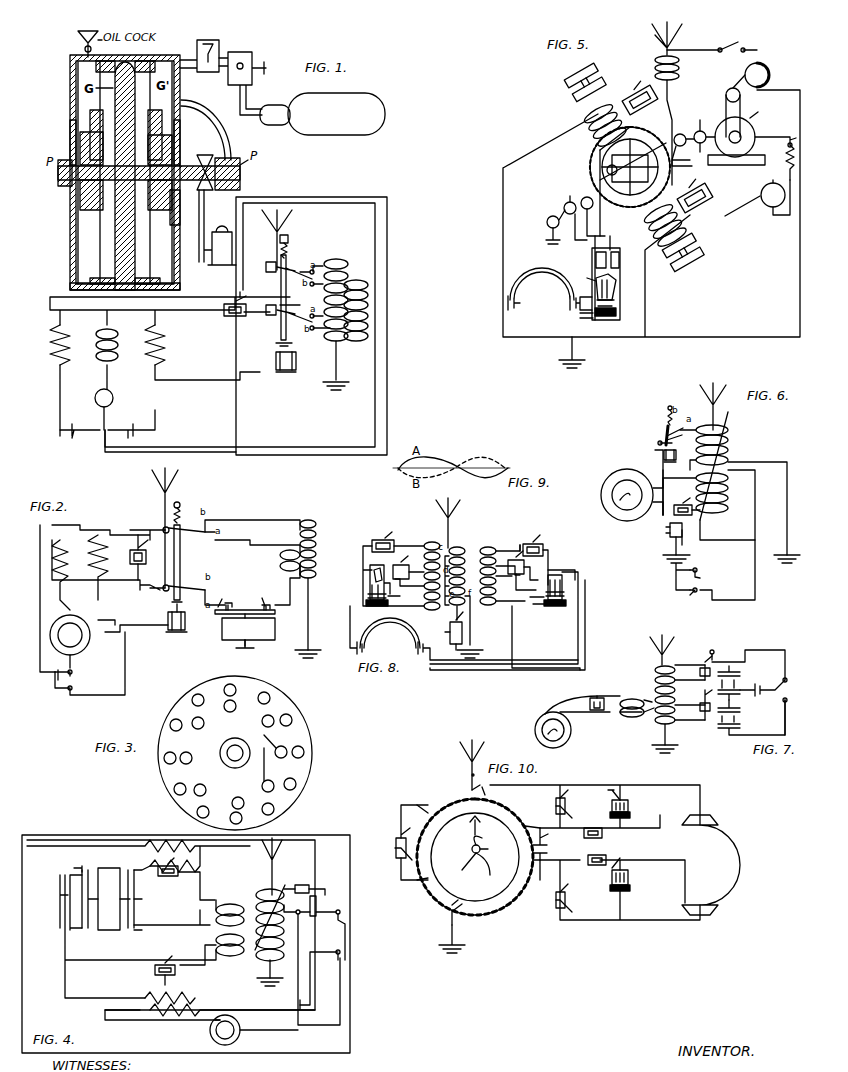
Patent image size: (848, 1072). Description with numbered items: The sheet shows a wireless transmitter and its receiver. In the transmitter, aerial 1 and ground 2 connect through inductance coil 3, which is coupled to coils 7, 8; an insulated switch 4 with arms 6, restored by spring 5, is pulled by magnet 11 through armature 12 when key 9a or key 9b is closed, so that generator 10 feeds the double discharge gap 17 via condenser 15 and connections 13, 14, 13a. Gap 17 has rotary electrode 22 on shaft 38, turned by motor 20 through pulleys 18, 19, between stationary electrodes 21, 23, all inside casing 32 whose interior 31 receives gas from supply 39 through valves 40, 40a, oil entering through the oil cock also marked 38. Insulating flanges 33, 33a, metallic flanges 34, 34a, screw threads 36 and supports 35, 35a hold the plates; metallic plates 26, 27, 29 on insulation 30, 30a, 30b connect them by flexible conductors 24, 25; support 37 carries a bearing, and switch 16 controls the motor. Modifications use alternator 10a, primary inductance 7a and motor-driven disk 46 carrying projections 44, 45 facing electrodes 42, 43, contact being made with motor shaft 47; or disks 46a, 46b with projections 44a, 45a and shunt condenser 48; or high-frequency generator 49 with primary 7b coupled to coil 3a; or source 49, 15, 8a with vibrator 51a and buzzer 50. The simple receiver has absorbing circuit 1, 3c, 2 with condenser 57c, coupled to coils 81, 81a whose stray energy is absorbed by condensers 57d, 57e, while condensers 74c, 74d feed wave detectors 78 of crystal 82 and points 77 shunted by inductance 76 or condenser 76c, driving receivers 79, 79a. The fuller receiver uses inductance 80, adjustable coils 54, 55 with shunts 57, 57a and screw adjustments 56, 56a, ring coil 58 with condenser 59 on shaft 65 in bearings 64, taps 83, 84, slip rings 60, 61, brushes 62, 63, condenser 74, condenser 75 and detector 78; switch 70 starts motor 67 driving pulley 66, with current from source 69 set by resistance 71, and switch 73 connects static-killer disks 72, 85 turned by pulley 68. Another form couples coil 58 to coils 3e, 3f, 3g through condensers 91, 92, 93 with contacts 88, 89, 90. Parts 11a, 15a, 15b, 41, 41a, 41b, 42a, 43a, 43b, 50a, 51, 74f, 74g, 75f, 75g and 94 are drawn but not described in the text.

In FIG. 1, the aerial or antenna system 1 is at (286, 222).
In FIG. 5, the aerial or antenna system 1 is at (672, 38).
In FIG. 6, the aerial or antenna system 1 is at (719, 406).
In FIG. 8, the aerial or antenna system 1 is at (452, 523).
In FIG. 2, the aerial or antenna system 1 is at (170, 499).
In FIG. 7, the aerial or antenna system 1 is at (668, 647).
In FIG. 10, the aerial or antenna system 1 is at (477, 764).
In FIG. 4, the aerial or antenna system 1 is at (278, 866).
In FIG. 1, the ground system 2 is at (341, 392).
In FIG. 5, the ground system 2 is at (578, 356).
In FIG. 6, the ground system 2 is at (790, 566).
In FIG. 8, the ground system 2 is at (475, 653).
In FIG. 2, the ground system 2 is at (310, 649).
In FIG. 7, the ground system 2 is at (669, 750).
In FIG. 10, the ground system 2 is at (456, 941).
In FIG. 4, the ground system 2 is at (273, 986).
In FIG. 1, the inductance coil 3 is at (330, 340).
In FIG. 2, the inductance coil 3 is at (320, 528).
In FIG. 7, the inductance coil 3 is at (673, 704).
In FIG. 4, the inductance coil 3 is at (270, 931).
In FIG. 6, the inductance coil 3a is at (718, 466).
In FIG. 8, the inductance coil 3c is at (460, 546).
In FIG. 10, the inductance coil 3e is at (475, 845).
In FIG. 10, the inductance coil 3f is at (480, 836).
In FIG. 10, the inductance coil 3g is at (528, 906).
In FIG. 1, the insulated switch 4 is at (278, 285).
In FIG. 6, the insulated switch 4 is at (662, 428).
In FIG. 2, the insulated switch 4 is at (182, 562).
In FIG. 4, the insulated switch 4 is at (318, 906).
In FIG. 1, the spring 5 is at (290, 249).
In FIG. 6, the spring 5 is at (666, 412).
In FIG. 2, the spring 5 is at (177, 512).
In FIG. 1, the switch arms 6 is at (290, 292).
In FIG. 6, the switch arms 6 is at (656, 448).
In FIG. 2, the switch arms 6 is at (184, 554).
In FIG. 4, the switch arms 6 is at (295, 905).
In FIG. 1, the inductance coil 7 is at (359, 295).
In FIG. 4, the inductance coil 7 is at (224, 913).
In FIG. 2, the primary inductance 7a is at (282, 557).
In FIG. 6, the primary inductance 7b is at (725, 508).
In FIG. 1, the inductance coil 8 is at (359, 326).
In FIG. 4, the inductance coil 8 is at (154, 936).
In FIG. 7, the inductance 8a is at (637, 714).
In FIG. 1, the key 9a is at (80, 438).
In FIG. 6, the key 9a is at (722, 570).
In FIG. 2, the key 9a is at (81, 670).
In FIG. 7, the key 9a is at (794, 714).
In FIG. 4, the key 9a is at (320, 977).
In FIG. 1, the key 9b is at (170, 431).
In FIG. 6, the key 9b is at (700, 570).
In FIG. 2, the key 9b is at (58, 672).
In FIG. 7, the key 9b is at (794, 671).
In FIG. 4, the key 9b is at (331, 965).
In FIG. 1, the generator 10 is at (113, 409).
In FIG. 2, the alternator 10a is at (80, 626).
In FIG. 4, the alternator 10a is at (254, 1029).
In FIG. 1, the magnet 11 is at (288, 374).
In FIG. 6, the magnet 11 is at (679, 453).
In FIG. 2, the magnet 11 is at (155, 631).
In FIG. 6, the electromagnet 11a is at (691, 539).
In FIG. 1, the armature 12 is at (274, 345).
In FIG. 2, the armature 12 is at (183, 605).
In FIG. 1, the connecting circuit element 13 is at (49, 345).
In FIG. 1, the connecting circuit element 13a is at (172, 345).
In FIG. 1, the connecting circuit element 14 is at (117, 345).
In FIG. 1, the condenser 15 is at (232, 318).
In FIG. 6, the condenser 15 is at (687, 502).
In FIG. 2, the condenser 15 is at (147, 557).
In FIG. 7, the condenser 15 is at (604, 703).
In FIG. 4, the condenser 15a is at (168, 878).
In FIG. 4, the condenser 15b is at (169, 967).
In FIG. 1, the switch 16 is at (256, 326).
In FIG. 1, the double discharge gap 17 is at (58, 179).
In FIG. 1, the pulley 18 is at (205, 156).
In FIG. 1, the pulley 19 is at (195, 262).
In FIG. 1, the motor 20 is at (221, 230).
In FIG. 2, the motor 20 is at (258, 634).
In FIG. 4, the motor 20 is at (108, 868).
In FIG. 1, the stationary electrode 21 is at (104, 242).
In FIG. 1, the rotary electrode 22 is at (115, 255).
In FIG. 1, the stationary electrode 23 is at (140, 250).
In FIG. 1, the flexible conductor 24 is at (96, 278).
In FIG. 1, the flexible conductor 25 is at (146, 275).
In FIG. 1, the metallic plate 26 is at (70, 283).
In FIG. 1, the metallic plate 27 is at (154, 281).
In FIG. 1, the metallic plate 29 is at (154, 66).
In FIG. 1, the insulation 30 is at (110, 60).
In FIG. 1, the insulation 30a is at (146, 60).
In FIG. 1, the insulation 30b is at (195, 290).
In FIG. 1, the interior of casing 31 is at (125, 173).
In FIG. 1, the casing 32 is at (70, 93).
In FIG. 1, the insulating flange 33 is at (90, 116).
In FIG. 1, the insulating flange 33a is at (163, 126).
In FIG. 1, the metallic flange 34 is at (80, 135).
In FIG. 1, the metallic flange 34a is at (172, 140).
In FIG. 1, the support 35 is at (70, 149).
In FIG. 1, the support 35a is at (189, 211).
In FIG. 1, the screw threads 36 is at (80, 202).
In FIG. 1, the support 37 is at (186, 113).
In FIG. 1, the shaft 38 is at (76, 37).
In FIG. 1, the gas supply 39 is at (322, 114).
In FIG. 1, the valve 40 is at (199, 48).
In FIG. 1, the relief valve 40a is at (250, 58).
In FIG. 2, the resistance 41 is at (80, 572).
In FIG. 4, the resistance 41a is at (138, 855).
In FIG. 4, the resistance 41b is at (210, 1002).
In FIG. 2, the stationary electrode 42 is at (230, 593).
In FIG. 4, the contact 42a is at (70, 921).
In FIG. 2, the stationary electrode 43 is at (264, 594).
In FIG. 4, the contact 43a is at (134, 868).
In FIG. 4, the contact 43b is at (172, 917).
In FIG. 2, the projections 44 is at (240, 617).
In FIG. 3, the projections 44 is at (176, 723).
In FIG. 4, the projections 44a is at (82, 866).
In FIG. 2, the projections 45 is at (272, 602).
In FIG. 3, the projections 45 is at (264, 756).
In FIG. 4, the projections 45a is at (151, 933).
In FIG. 2, the motor driven disk 46 is at (236, 602).
In FIG. 3, the motor driven disk 46 is at (234, 754).
In FIG. 4, the disk 46a is at (60, 893).
In FIG. 4, the disk 46b is at (134, 897).
In FIG. 2, the motor shaft 47 is at (236, 648).
In FIG. 3, the motor shaft 47 is at (234, 757).
In FIG. 4, the shunt condenser 48 is at (302, 885).
In FIG. 6, the high frequency generator 49 is at (620, 472).
In FIG. 7, the high frequency generator 49 is at (588, 722).
In FIG. 7, the buzzer 50 is at (741, 673).
In FIG. 7, the condenser 50a is at (738, 715).
In FIG. 7, the variable condenser 51 is at (737, 663).
In FIG. 7, the musically toned vibrator 51a is at (700, 704).
In FIG. 5, the adjustable inductance coil 54 is at (585, 137).
In FIG. 5, the adjustable inductance coil 55 is at (690, 224).
In FIG. 5, the screw adjustment 56 is at (590, 62).
In FIG. 5, the screw adjustment 56a is at (700, 264).
In FIG. 5, the shunt condenser 57 is at (638, 87).
In FIG. 5, the shunt condenser 57a is at (714, 196).
In FIG. 8, the condenser 57c is at (450, 634).
In FIG. 8, the condenser 57d is at (408, 576).
In FIG. 8, the condenser 57e is at (522, 571).
In FIG. 10, the condenser 57e is at (396, 842).
In FIG. 5, the rotary inductance coil 58 is at (632, 175).
In FIG. 10, the rotary inductance coil 58 is at (486, 825).
In FIG. 5, the condenser 59 is at (630, 167).
In FIG. 5, the slip ring 60 is at (563, 203).
In FIG. 5, the slip ring 61 is at (584, 211).
In FIG. 5, the collecting brush 62 is at (573, 233).
In FIG. 5, the collecting brush 63 is at (603, 228).
In FIG. 5, the bearing 64 is at (549, 227).
In FIG. 5, the shaft 65 is at (647, 145).
In FIG. 10, the shaft 65 is at (484, 855).
In FIG. 5, the pulley 66 is at (705, 130).
In FIG. 5, the motor 67 is at (755, 125).
In FIG. 5, the pulley 68 is at (726, 95).
In FIG. 5, the current source 69 is at (775, 202).
In FIG. 5, the switch 70 is at (776, 133).
In FIG. 5, the resistance 71 is at (788, 155).
In FIG. 5, the disk 72 is at (770, 65).
In FIG. 5, the switch 73 is at (712, 38).
In FIG. 5, the condenser 74 is at (612, 252).
In FIG. 8, the condenser 74c is at (393, 563).
In FIG. 8, the condenser 74d is at (545, 557).
In FIG. 10, the condenser 74f is at (577, 804).
In FIG. 10, the condenser 74g is at (576, 899).
In FIG. 5, the condenser 75 is at (626, 260).
In FIG. 10, the resistance 75f is at (602, 839).
In FIG. 10, the resistance 75g is at (596, 852).
In FIG. 5, the inductance 76 is at (614, 282).
In FIG. 8, the inductance 76 is at (370, 569).
In FIG. 8, the condenser 76c is at (564, 567).
In FIG. 5, the electrodes or metallic points 77 is at (616, 300).
In FIG. 8, the electrodes or metallic points 77 is at (368, 592).
In FIG. 10, the electrodes or metallic points 77 is at (629, 839).
In FIG. 5, the wave detector 78 is at (616, 314).
In FIG. 8, the wave detector 78 is at (366, 606).
In FIG. 10, the wave detector 78 is at (628, 857).
In FIG. 5, the telephone receiver 79 is at (549, 298).
In FIG. 8, the telephone receiver 79 is at (376, 648).
In FIG. 10, the telephone receiver 79 is at (711, 865).
In FIG. 8, the telephone receiver 79a is at (418, 642).
In FIG. 10, the telephone receiver 79a is at (701, 886).
In FIG. 5, the inductance 80 is at (679, 120).
In FIG. 8, the inductance coil 81 is at (428, 565).
In FIG. 8, the inductance coil 81a is at (502, 565).
In FIG. 5, the sensitive crystal 82 is at (579, 323).
In FIG. 8, the sensitive crystal 82 is at (484, 631).
In FIG. 5, the adjustable tap 83 is at (598, 173).
In FIG. 5, the adjustable tap 84 is at (660, 150).
In FIG. 5, the disk 85 is at (740, 70).
In FIG. 10, the contact 88 is at (462, 824).
In FIG. 10, the contact 89 is at (458, 871).
In FIG. 10, the contact 90 is at (493, 874).
In FIG. 10, the condenser 91 is at (480, 784).
In FIG. 10, the condenser 92 is at (549, 854).
In FIG. 10, the condenser 93 is at (460, 913).
In FIG. 5, the grid 94 is at (581, 275).
In FIG. 10, the grid 94 is at (618, 822).